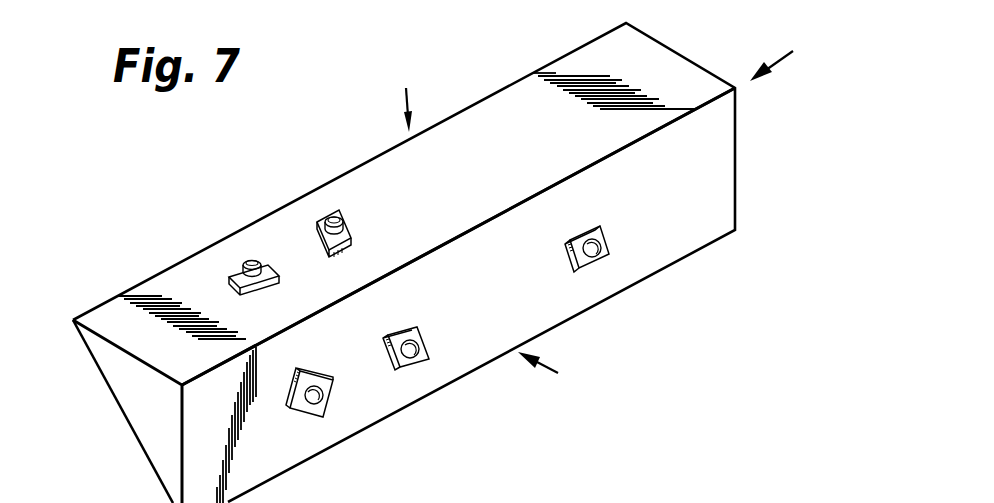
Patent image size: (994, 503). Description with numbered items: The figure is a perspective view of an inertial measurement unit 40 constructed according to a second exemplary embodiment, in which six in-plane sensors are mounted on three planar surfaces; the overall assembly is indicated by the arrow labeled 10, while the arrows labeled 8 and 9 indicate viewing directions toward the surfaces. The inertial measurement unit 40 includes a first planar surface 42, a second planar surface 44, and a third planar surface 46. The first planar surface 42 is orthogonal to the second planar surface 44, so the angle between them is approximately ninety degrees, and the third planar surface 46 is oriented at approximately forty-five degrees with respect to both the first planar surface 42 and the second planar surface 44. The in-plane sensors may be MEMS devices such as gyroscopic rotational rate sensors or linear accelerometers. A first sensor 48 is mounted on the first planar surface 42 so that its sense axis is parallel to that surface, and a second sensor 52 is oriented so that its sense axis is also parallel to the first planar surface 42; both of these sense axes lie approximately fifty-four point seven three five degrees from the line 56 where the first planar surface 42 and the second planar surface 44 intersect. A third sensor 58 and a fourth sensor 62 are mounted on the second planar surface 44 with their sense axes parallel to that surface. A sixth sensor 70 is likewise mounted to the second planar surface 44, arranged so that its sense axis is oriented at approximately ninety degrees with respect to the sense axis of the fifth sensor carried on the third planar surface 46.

The cargo container / structure 10 is at (797, 56).
The view direction of FIG. 8 is at (406, 94).
The view direction of FIG. 9 is at (552, 370).
The inertial measurement unit 40 is at (153, 225).
The first planar surface 42 is at (688, 88).
The second planar surface 44 is at (720, 140).
The third planar surface 46 is at (123, 418).
The first sensor 48 is at (238, 264).
The second sensor 52 is at (330, 208).
The line intersecting first planar surface and second planar surface 56 is at (647, 140).
The third sensor 58 is at (314, 413).
The fourth sensor 62 is at (418, 368).
The sixth sensor 70 is at (563, 259).